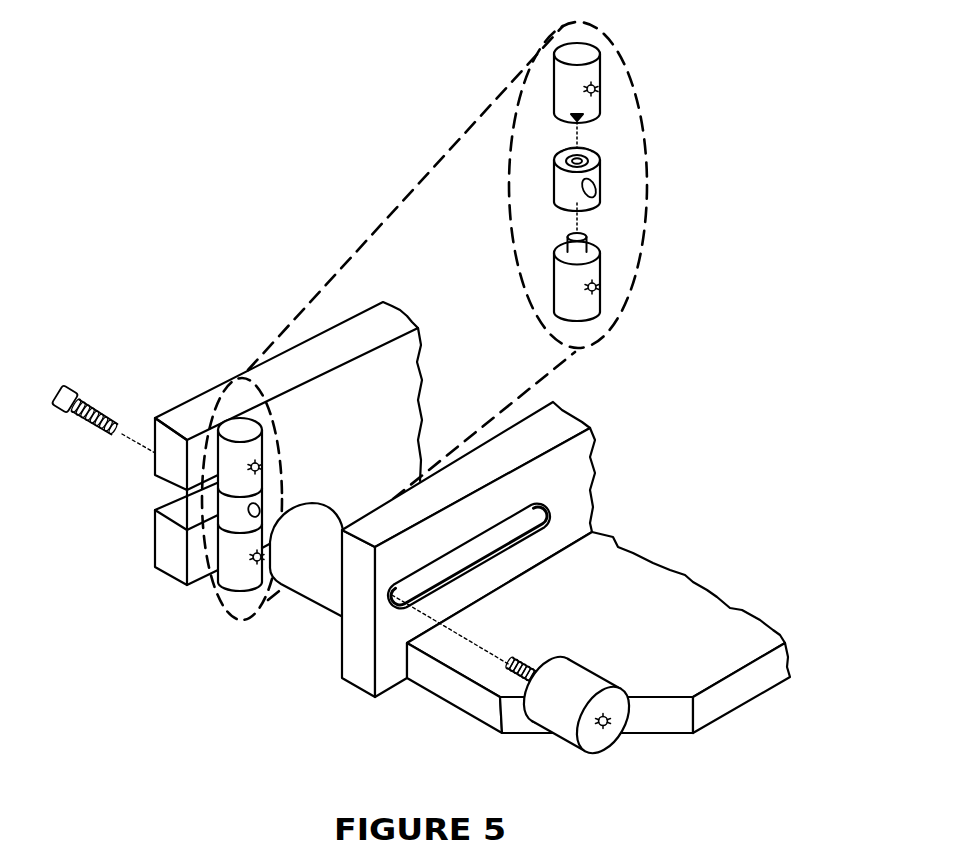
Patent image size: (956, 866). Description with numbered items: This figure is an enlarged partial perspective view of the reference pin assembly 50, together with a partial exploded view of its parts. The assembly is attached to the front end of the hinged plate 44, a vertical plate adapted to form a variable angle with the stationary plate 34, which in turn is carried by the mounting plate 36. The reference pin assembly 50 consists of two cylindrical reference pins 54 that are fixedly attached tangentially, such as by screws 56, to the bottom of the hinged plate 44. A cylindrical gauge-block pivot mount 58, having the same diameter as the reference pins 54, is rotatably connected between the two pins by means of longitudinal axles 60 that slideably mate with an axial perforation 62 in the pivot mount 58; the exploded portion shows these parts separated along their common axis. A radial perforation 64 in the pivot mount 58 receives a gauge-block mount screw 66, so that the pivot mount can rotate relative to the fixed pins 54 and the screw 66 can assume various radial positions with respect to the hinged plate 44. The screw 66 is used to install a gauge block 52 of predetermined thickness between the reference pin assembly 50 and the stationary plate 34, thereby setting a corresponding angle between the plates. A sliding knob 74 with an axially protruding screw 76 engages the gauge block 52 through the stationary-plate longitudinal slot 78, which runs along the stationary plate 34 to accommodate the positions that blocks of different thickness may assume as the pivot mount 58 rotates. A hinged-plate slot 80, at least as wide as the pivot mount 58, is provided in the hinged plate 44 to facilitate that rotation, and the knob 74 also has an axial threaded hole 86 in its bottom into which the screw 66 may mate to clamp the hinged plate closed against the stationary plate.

The stationary plate 34 is at (543, 430).
The mounting plate 36 is at (683, 617).
The hinged plate 44 is at (338, 347).
The reference pin assembly 50 is at (262, 404).
The gauge block 52 is at (322, 587).
The reference pins 54 is at (588, 76).
The screws 56 is at (262, 470).
The gauge-block pivot mount 58 is at (603, 148).
The longitudinal axles 60 is at (572, 128).
The axial perforation 62 is at (598, 149).
The radial perforation 64 is at (594, 195).
The gauge-block mount screw 66 is at (58, 390).
The sliding knob 74 is at (560, 708).
The axially protruding screw 76 is at (527, 668).
The stationary-plate longitudinal slot 78 is at (500, 542).
The hinged-plate slot 80 is at (190, 508).
The axial threaded hole 86 is at (610, 714).